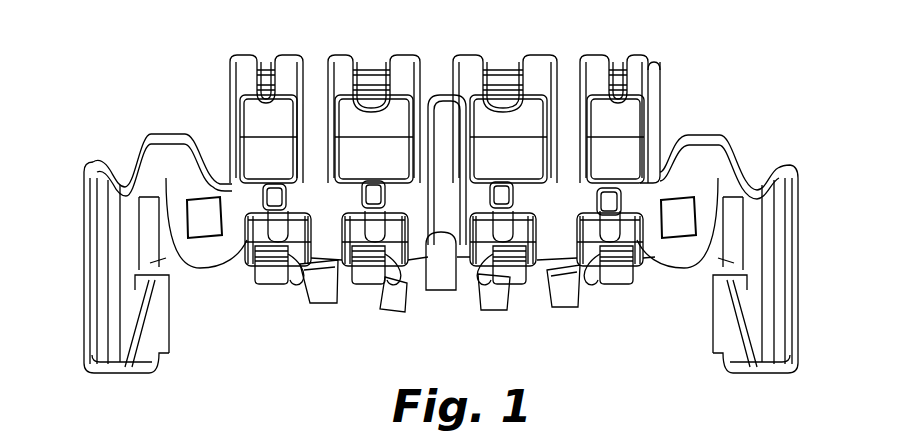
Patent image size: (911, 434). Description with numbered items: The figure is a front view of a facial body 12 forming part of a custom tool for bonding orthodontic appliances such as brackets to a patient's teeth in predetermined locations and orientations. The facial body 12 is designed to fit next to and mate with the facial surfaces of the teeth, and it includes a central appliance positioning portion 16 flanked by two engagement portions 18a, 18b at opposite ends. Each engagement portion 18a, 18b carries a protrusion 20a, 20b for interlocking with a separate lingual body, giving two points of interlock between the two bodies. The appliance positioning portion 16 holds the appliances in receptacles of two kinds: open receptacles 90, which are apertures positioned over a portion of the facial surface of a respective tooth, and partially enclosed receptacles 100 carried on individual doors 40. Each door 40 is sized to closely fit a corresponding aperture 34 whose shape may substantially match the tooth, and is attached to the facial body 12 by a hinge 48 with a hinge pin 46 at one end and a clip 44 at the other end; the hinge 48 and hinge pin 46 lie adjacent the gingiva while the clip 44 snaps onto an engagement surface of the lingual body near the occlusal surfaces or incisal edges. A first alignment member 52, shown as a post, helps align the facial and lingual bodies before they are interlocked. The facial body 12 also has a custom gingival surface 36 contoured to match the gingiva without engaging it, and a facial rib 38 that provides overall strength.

The facial body 12 is at (771, 63).
The appliance positioning portion 16 is at (447, 212).
The engagement portion 18a is at (790, 260).
The engagement portion 18b is at (108, 260).
The protrusion 20a is at (725, 337).
The protrusion 20b is at (170, 333).
The aperture 34 is at (320, 177).
The custom gingival surface 36 is at (684, 138).
The facial rib 38 is at (741, 148).
The door 40 is at (291, 193).
The clip 44 is at (320, 293).
The hinge pin 46 is at (380, 77).
The hinge 48 is at (543, 67).
The first alignment member 52 is at (440, 277).
The open receptacle 90 is at (203, 225).
The partially enclosed receptacle 100 is at (372, 183).